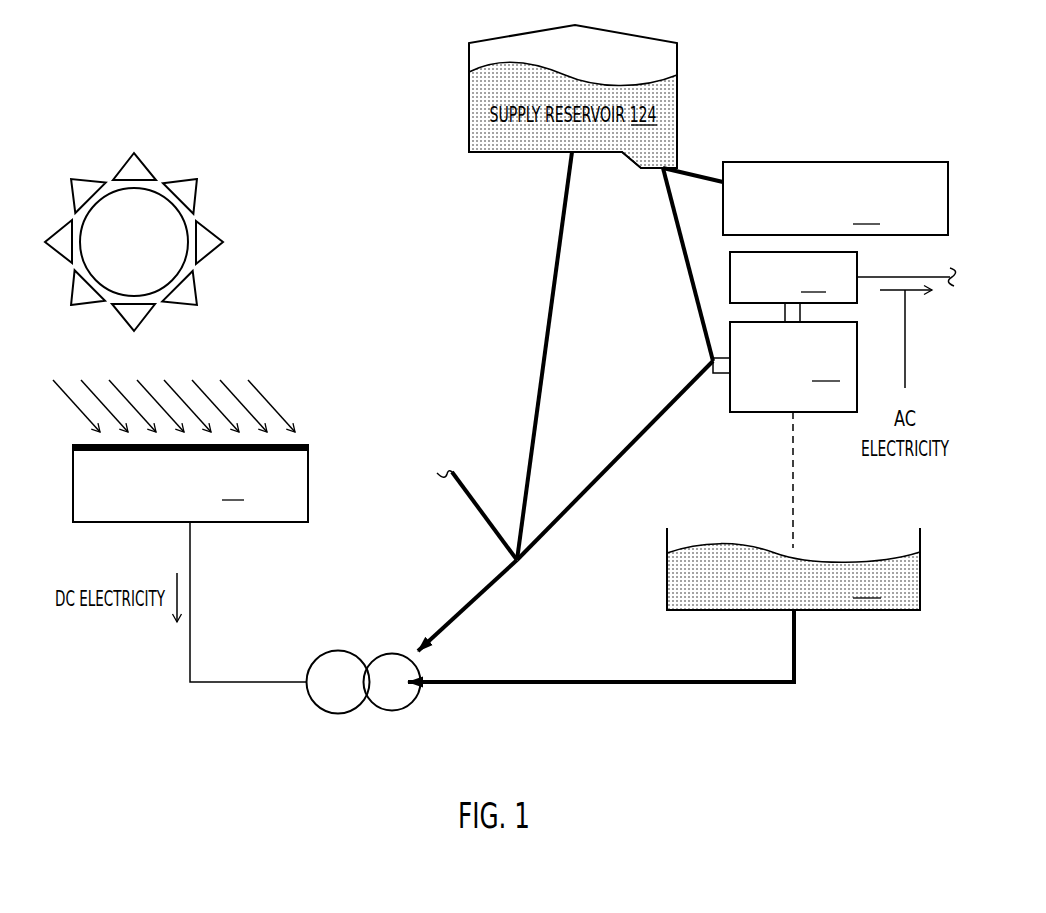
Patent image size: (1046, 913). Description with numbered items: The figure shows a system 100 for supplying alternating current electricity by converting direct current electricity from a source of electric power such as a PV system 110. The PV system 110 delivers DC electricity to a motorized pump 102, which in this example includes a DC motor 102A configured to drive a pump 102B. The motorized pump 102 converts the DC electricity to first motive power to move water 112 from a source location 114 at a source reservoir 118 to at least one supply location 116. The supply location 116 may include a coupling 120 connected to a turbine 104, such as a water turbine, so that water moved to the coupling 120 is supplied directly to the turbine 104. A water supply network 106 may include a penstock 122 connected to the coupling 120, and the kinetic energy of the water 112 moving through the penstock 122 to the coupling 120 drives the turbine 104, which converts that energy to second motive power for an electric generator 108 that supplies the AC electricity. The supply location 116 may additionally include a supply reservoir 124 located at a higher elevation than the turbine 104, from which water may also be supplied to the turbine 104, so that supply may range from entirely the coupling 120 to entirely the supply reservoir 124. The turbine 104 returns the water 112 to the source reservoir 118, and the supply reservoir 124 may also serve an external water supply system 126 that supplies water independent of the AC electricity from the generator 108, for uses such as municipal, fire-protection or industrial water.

The system 100 is at (245, 45).
The motorized pump 102 is at (374, 664).
The DC motor 102A is at (330, 713).
The pump 102B is at (407, 707).
The turbine 104 is at (793, 357).
The water supply network 106 is at (506, 416).
The electric generator 108 is at (793, 277).
The PV system 110 is at (190, 483).
The water 112 is at (479, 95).
The source location 114 is at (866, 529).
The supply location 116 is at (629, 344).
The source reservoir 118 is at (793, 569).
The coupling 120 is at (718, 377).
The penstock 122 is at (673, 406).
The supply reservoir 124 is at (573, 96).
The external water supply system 126 is at (805, 198).